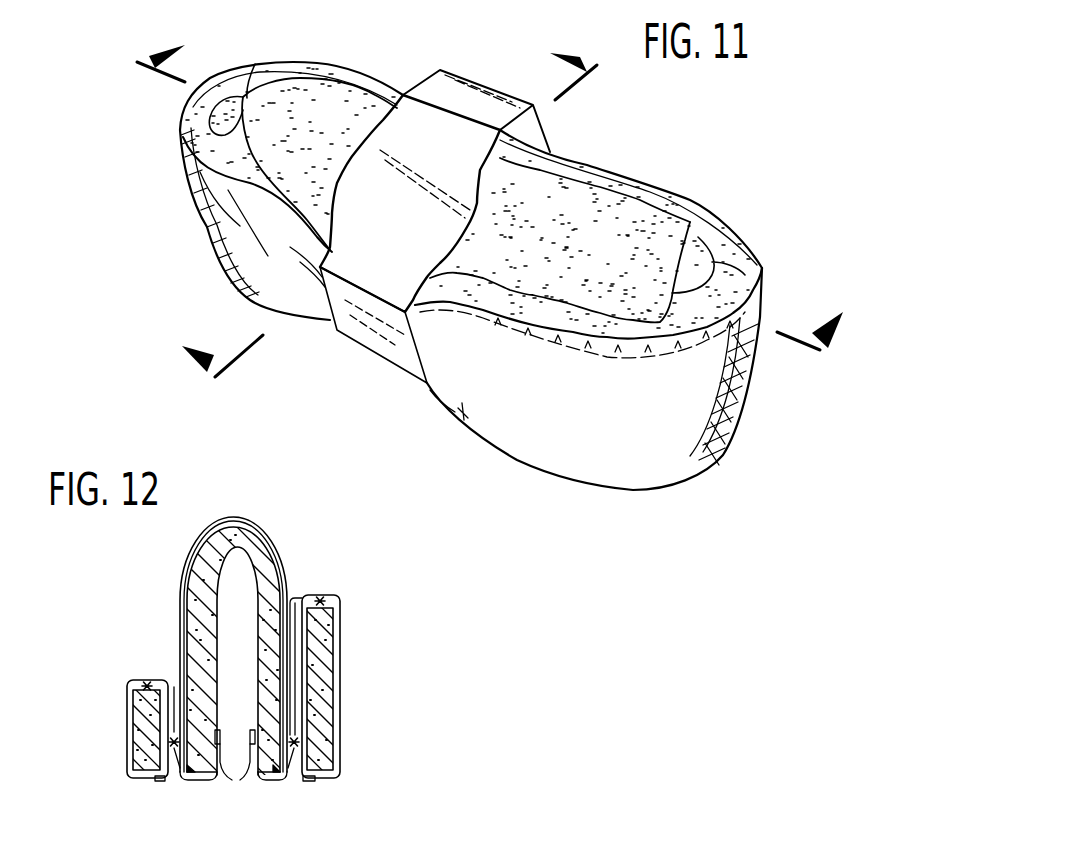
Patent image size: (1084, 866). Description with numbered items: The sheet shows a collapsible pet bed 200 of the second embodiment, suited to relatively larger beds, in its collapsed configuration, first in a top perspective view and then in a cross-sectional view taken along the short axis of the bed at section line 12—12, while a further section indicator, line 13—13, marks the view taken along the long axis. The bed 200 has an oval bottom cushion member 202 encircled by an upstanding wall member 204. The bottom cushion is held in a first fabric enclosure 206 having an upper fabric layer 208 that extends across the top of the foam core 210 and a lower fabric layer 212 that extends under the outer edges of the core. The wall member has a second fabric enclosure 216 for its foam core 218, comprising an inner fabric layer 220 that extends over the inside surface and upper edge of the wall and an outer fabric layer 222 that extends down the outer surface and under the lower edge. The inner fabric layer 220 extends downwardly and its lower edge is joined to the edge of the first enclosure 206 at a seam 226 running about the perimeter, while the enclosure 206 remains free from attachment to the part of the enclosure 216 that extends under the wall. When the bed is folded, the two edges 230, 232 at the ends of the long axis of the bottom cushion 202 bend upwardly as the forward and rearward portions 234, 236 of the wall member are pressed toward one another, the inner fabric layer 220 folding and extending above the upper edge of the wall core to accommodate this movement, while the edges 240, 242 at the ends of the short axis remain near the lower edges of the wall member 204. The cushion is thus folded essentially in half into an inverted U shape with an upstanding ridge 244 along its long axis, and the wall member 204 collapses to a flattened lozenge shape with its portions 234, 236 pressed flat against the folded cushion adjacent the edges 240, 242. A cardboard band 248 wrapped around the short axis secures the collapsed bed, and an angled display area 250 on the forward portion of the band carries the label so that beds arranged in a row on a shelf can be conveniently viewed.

In FIG. 11, the pet bed 200 is at (168, 170).
In FIG. 12, the pet bed 200 is at (160, 558).
In FIG. 11, the bottom cushion member 202 is at (569, 200).
In FIG. 12, the bottom cushion member 202 is at (270, 526).
In FIG. 11, the wall member 204 is at (643, 464).
In FIG. 12, the wall member 204 is at (124, 686).
In FIG. 11, the first fabric enclosure 206 is at (626, 214).
In FIG. 12, the first fabric enclosure 206 is at (284, 552).
In FIG. 12, the upper fabric layer 208 is at (289, 572).
In FIG. 12, the foam core 210 is at (195, 598).
In FIG. 12, the lower fabric layer 212 is at (232, 760).
In FIG. 11, the second fabric enclosure 216 is at (483, 407).
In FIG. 12, the second fabric enclosure 216 is at (340, 653).
In FIG. 12, the foam core of the wall member 218 is at (328, 672).
In FIG. 11, the inner fabric layer 220 is at (763, 290).
In FIG. 12, the inner fabric layer 220 is at (306, 640).
In FIG. 11, the outer fabric layer 222 is at (700, 455).
In FIG. 12, the outer fabric layer 222 is at (340, 688).
In FIG. 12, the seam 226 is at (298, 744).
In FIG. 11, the edge at end of long axis 230 is at (297, 82).
In FIG. 11, the edge at end of long axis 232 is at (720, 292).
In FIG. 12, the forward portion of the wall member 234 is at (140, 717).
In FIG. 12, the rearward portion of the wall member 236 is at (337, 707).
In FIG. 12, the edge at end of short axis 240 is at (198, 775).
In FIG. 12, the edge at end of short axis 242 is at (274, 770).
In FIG. 12, the upstanding ridge 244 is at (240, 517).
In FIG. 11, the cardboard band 248 is at (353, 335).
In FIG. 11, the display area 250 is at (368, 218).
In FIG. 11, the section line 12— 12 is at (378, 205).
In FIG. 11, the section line 13— 13 is at (495, 186).